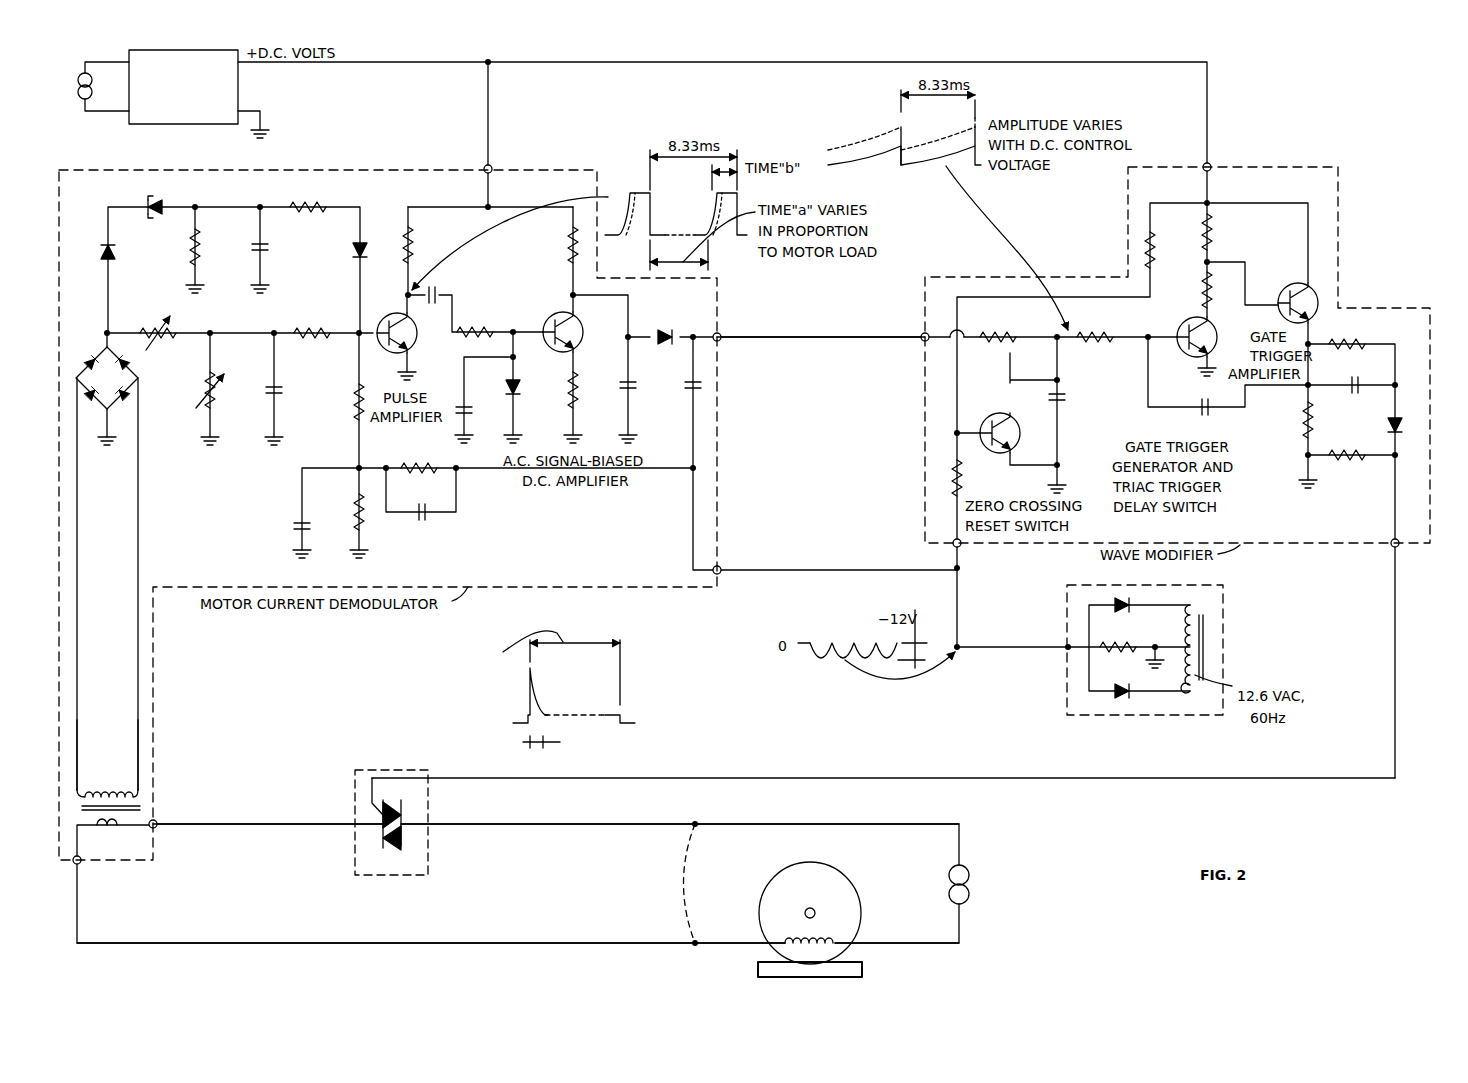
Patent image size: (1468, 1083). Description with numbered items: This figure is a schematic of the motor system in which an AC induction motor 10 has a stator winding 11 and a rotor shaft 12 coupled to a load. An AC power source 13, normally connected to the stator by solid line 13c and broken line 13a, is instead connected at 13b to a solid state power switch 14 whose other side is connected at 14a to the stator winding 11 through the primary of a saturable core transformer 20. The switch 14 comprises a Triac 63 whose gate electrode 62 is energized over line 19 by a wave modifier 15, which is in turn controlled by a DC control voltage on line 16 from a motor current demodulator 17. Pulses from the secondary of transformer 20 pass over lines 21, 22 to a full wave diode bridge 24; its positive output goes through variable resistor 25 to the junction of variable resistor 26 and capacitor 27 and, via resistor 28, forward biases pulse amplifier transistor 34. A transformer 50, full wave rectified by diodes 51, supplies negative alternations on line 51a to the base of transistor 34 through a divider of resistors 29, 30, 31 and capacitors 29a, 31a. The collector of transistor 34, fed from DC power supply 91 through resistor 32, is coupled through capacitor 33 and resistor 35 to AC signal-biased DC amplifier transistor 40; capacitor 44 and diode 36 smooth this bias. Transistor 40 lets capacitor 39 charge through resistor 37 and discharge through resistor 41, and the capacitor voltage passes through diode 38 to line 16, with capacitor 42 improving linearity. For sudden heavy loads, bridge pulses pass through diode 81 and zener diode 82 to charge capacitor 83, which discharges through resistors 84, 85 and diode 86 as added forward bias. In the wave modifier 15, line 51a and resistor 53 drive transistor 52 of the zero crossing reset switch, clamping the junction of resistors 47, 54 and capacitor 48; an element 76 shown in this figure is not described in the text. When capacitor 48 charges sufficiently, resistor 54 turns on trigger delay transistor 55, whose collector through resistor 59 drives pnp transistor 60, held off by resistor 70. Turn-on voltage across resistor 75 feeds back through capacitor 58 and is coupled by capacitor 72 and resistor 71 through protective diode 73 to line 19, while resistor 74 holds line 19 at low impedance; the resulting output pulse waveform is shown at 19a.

The AC induction motor 10 is at (846, 892).
The stator winding 11 is at (797, 938).
The rotor shaft 12 is at (826, 899).
The AC power source 13 is at (969, 882).
The broken line connection 13a is at (677, 880).
The connection to power switch 13b is at (664, 826).
The solid line connection 13c is at (918, 945).
The solid state power switch 14 is at (356, 850).
The stator input power line 14a is at (258, 826).
The wave modifier 15 is at (1292, 170).
The DC control voltage line 16 is at (910, 338).
The motor current demodulator 17 is at (448, 170).
The gate drive line 19 is at (898, 779).
The output signal waveform 19a is at (660, 776).
The saturable core transformer 20 is at (148, 811).
The secondary line 21 is at (80, 728).
The secondary line 22 is at (138, 732).
The full wave diode bridge 24 is at (116, 390).
The variable resistor 25 is at (150, 327).
The variable resistor 26 is at (205, 385).
The capacitor 27 is at (277, 390).
The resistor 28 is at (325, 328).
The resistor 29 is at (355, 508).
The capacitor 29a is at (294, 524).
The resistor 30 is at (355, 402).
The resistor 31 is at (432, 462).
The capacitor 31a is at (422, 522).
The resistor 32 is at (411, 254).
The capacitor 33 is at (436, 289).
The pulse amplifier transistor 34 is at (412, 342).
The resistor 35 is at (488, 326).
The diode 36 is at (506, 390).
The resistor 37 is at (568, 246).
The diode 38 is at (660, 332).
The capacitor 39 is at (622, 392).
The AC signal-biased DC amplifier transistor 40 is at (584, 336).
The resistor 41 is at (568, 388).
The capacitor 42 is at (688, 392).
The capacitor 44 is at (472, 412).
The resistor 47 is at (1004, 328).
The capacitor 48 is at (1066, 396).
The transformer 50 is at (1208, 620).
The full wave rectifiers 51 is at (1122, 688).
The rectifier output line 51a is at (847, 661).
The zero crossing reset transistor 52 is at (1020, 446).
The resistor 53 is at (1154, 254).
The resistor 54 is at (1094, 330).
The Triac trigger delay switch transistor 55 is at (1213, 345).
The capacitor 58 is at (1200, 418).
The resistor 59 is at (1202, 290).
The pnp transistor 60 is at (1290, 288).
The gate electrode 62 is at (372, 790).
The Triac 63 is at (392, 850).
The resistor 70 is at (1210, 238).
The resistor 71 is at (1352, 339).
The capacitor 72 is at (1360, 393).
The protective diode 73 is at (1388, 427).
The resistor 74 is at (1336, 466).
The resistor 75 is at (1303, 422).
The resistor 76 is at (960, 488).
The diode 81 is at (102, 252).
The zener diode 82 is at (153, 203).
The capacitor 83 is at (257, 249).
The resistor 84 is at (192, 252).
The resistor 85 is at (312, 205).
The diode 86 is at (352, 250).
The DC power supply 91 is at (240, 107).